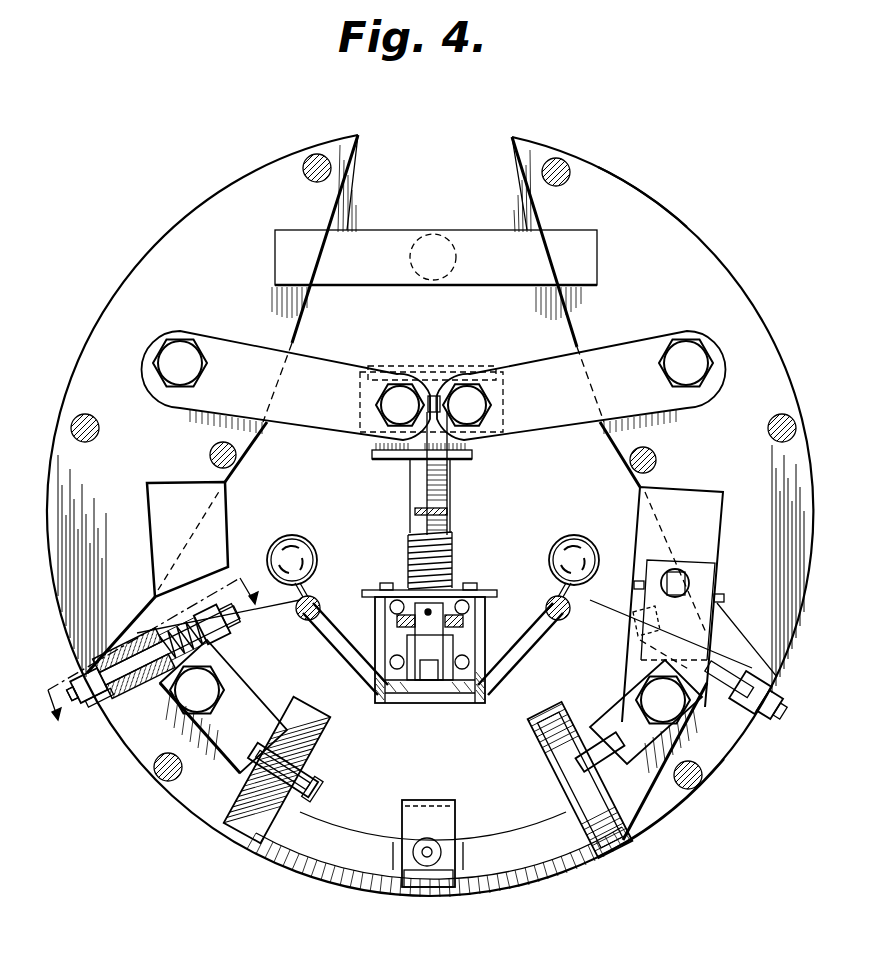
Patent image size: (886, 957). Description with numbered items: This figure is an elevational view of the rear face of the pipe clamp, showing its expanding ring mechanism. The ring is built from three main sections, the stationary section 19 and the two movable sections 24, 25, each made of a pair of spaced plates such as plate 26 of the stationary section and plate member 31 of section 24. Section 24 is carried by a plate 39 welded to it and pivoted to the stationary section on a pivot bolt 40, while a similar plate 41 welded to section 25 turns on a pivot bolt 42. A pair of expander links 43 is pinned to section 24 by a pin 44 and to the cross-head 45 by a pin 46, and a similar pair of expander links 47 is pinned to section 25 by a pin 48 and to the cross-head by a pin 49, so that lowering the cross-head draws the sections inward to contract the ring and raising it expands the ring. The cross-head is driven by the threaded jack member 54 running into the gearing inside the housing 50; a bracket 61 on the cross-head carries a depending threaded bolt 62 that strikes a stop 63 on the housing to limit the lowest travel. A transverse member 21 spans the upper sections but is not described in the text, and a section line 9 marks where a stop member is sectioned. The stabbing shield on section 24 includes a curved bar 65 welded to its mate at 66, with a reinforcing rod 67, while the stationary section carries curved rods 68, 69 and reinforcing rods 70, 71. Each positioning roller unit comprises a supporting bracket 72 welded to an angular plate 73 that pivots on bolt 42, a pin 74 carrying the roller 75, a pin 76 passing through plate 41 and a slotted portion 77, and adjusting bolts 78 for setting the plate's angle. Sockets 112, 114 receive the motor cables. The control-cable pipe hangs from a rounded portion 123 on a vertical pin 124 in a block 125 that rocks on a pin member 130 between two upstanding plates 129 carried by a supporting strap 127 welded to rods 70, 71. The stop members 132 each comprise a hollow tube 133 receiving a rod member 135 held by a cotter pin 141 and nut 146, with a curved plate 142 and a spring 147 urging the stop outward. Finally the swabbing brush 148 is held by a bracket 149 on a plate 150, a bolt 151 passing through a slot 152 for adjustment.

The section line 9- 9 is at (153, 663).
The stationary section 19 is at (726, 766).
The cross bar 21 is at (365, 238).
The ring section 24 is at (178, 213).
The ring section 25 is at (662, 195).
The plate 26 is at (480, 757).
The plate member 31 is at (208, 257).
The plate 39 is at (215, 522).
The pivot bolt 40 is at (192, 690).
The plate 41 is at (642, 506).
The pivot bolt 42 is at (688, 705).
The expander links 43 is at (312, 363).
The pin 44 is at (168, 358).
The cross-head 45 is at (440, 378).
The pin 46 is at (400, 402).
The expander links 47 is at (556, 410).
The pin 48 is at (700, 360).
The pin 49 is at (470, 403).
The housing 50 is at (490, 592).
The jack member 54 is at (450, 490).
The bracket 61 is at (398, 458).
The threaded bolt 62 is at (448, 512).
The stop 63 is at (452, 572).
The curved bar 65 is at (318, 162).
The weld 66 is at (82, 418).
The reinforcing rod 67 is at (238, 462).
The curved rod 68 is at (162, 780).
The curved rod 69 is at (692, 786).
The reinforcing rod 70 is at (320, 600).
The reinforcing rod 71 is at (565, 618).
The supporting bracket 72 is at (320, 772).
The angular plate 73 is at (244, 722).
The pin 74 is at (318, 792).
The roller 75 is at (252, 838).
The pin 76 is at (678, 575).
The slotted portion 77 is at (715, 570).
The adjusting bolts 78 is at (634, 585).
The socket 112 is at (588, 560).
The socket 114 is at (294, 535).
The rounded portion 123 is at (463, 618).
The vertical pin 124 is at (398, 620).
The block 125 is at (430, 680).
The supporting strap 127 is at (514, 652).
The upstanding plates 129 is at (405, 695).
The pin member 130 is at (455, 655).
The stop members 132 is at (88, 714).
The hollow tube 133 is at (170, 640).
The rod member 135 is at (135, 660).
The cotter pin 141 is at (108, 712).
The curved plate 142 is at (84, 676).
The nut 146 is at (225, 624).
The spring 147 is at (212, 622).
The brush 148 is at (540, 875).
The bracket 149 is at (490, 868).
The plate 150 is at (422, 812).
The bolt 151 is at (432, 850).
The slot 152 is at (413, 888).